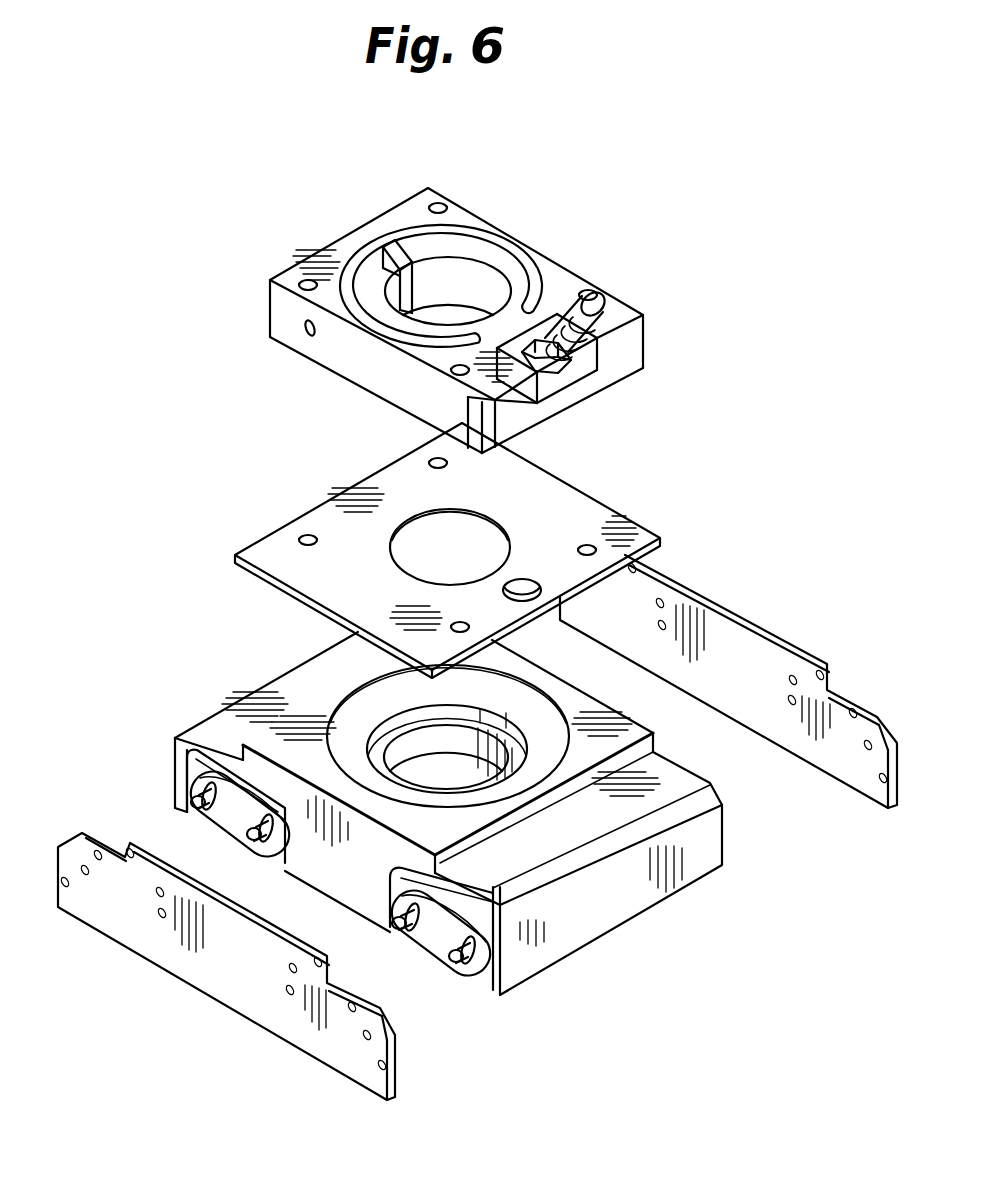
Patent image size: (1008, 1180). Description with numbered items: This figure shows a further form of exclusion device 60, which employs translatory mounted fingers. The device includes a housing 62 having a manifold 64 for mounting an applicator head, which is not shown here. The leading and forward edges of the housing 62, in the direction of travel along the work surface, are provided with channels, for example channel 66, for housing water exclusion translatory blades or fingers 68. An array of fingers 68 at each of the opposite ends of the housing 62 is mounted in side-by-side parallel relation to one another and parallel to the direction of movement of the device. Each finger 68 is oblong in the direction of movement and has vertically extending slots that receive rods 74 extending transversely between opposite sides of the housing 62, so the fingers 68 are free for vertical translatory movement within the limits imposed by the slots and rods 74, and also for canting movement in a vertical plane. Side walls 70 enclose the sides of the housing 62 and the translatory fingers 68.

The exclusion device 60 is at (196, 514).
The housing 62 is at (253, 697).
The manifold 64 is at (273, 320).
The channel 66 is at (186, 807).
The finger 68 is at (275, 850).
The side wall 70 is at (257, 990).
The rod 74 is at (257, 836).